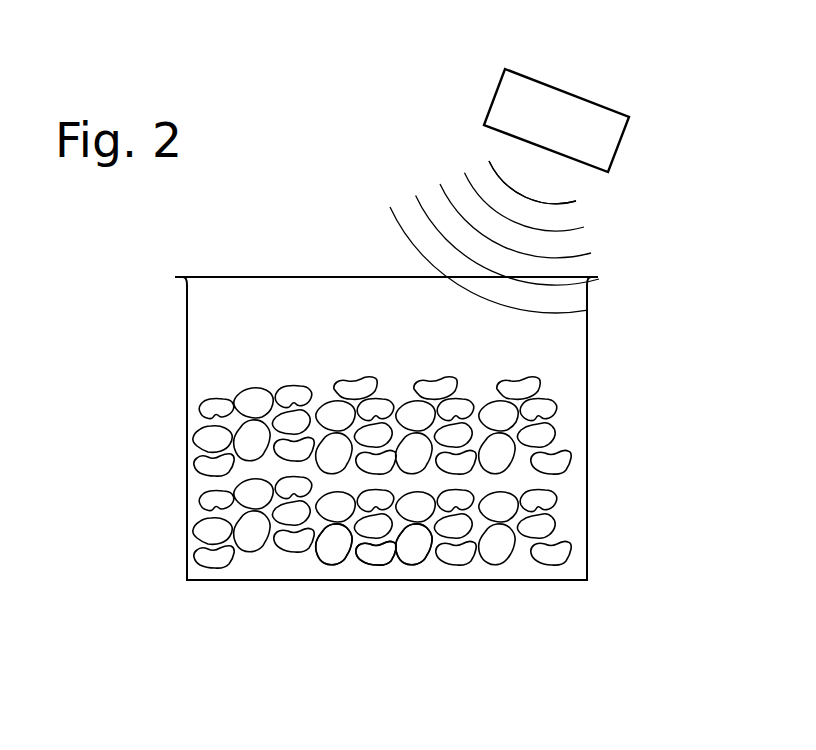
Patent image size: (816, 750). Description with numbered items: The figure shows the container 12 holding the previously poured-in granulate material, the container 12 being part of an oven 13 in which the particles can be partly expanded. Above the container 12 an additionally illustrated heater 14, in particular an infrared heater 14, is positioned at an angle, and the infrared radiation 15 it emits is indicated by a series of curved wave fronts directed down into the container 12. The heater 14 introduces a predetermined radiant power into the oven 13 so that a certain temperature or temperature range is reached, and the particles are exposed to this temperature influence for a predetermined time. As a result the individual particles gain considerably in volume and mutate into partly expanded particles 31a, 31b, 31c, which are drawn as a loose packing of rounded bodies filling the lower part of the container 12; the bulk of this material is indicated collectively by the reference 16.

The container 12 is at (186, 335).
The oven 13 is at (628, 258).
The infrared heater 14 is at (581, 117).
The infrared radiation 15 is at (529, 197).
The bulk material / particles 16 is at (555, 390).
The partly expanded particle 31a is at (337, 552).
The partly expanded particle 31b is at (383, 558).
The partly expanded particle 31c is at (415, 550).